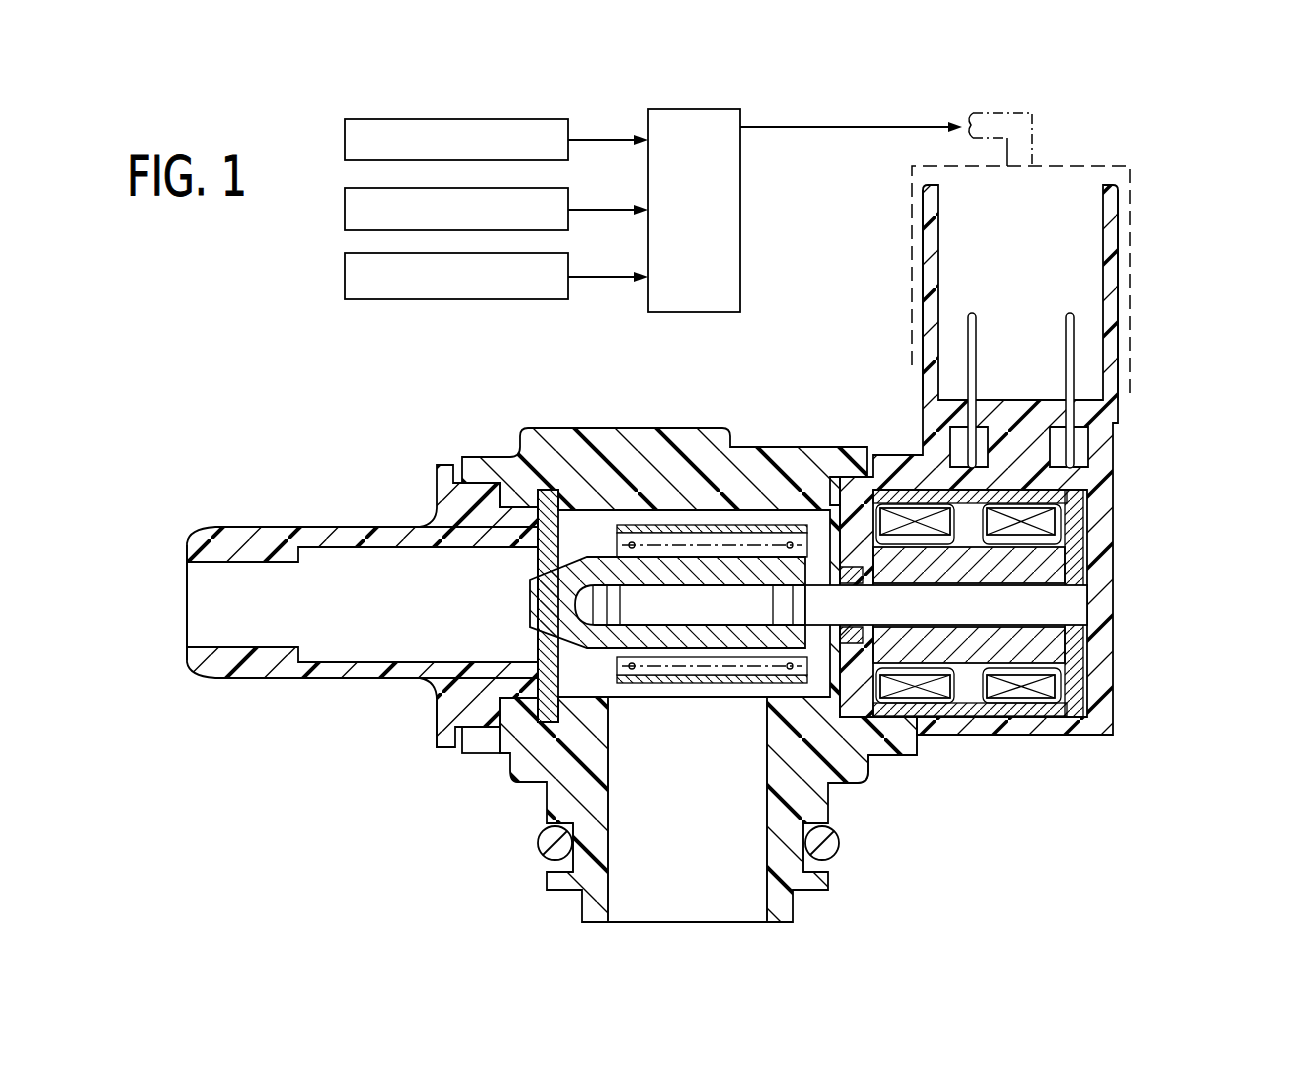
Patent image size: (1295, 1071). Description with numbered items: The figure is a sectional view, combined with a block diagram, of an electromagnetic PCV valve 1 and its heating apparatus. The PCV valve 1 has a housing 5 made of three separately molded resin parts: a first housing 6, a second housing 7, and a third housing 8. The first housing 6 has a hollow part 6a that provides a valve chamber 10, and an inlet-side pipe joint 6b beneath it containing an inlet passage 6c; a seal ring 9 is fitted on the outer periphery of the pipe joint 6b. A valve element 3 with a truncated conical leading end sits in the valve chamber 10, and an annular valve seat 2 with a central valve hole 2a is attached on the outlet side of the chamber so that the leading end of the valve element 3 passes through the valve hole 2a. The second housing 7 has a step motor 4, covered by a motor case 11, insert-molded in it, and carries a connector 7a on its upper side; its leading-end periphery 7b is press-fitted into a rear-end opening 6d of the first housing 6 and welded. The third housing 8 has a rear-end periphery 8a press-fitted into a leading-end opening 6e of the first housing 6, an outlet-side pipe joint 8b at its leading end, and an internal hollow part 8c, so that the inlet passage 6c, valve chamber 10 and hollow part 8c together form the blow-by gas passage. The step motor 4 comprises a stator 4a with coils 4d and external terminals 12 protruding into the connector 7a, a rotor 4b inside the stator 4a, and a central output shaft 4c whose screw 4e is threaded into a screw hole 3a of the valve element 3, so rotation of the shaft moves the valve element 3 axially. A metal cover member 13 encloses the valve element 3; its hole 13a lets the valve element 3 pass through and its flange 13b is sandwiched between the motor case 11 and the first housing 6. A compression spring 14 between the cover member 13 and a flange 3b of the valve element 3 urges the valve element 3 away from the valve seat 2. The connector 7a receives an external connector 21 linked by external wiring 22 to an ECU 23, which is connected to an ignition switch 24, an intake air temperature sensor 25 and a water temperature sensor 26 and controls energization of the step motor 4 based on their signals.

The electromagnetic PCV valve 1 is at (722, 553).
The valve seat 2 is at (520, 545).
The valve hole 2a is at (540, 563).
The valve element 3 is at (712, 512).
The screw hole 3a is at (687, 613).
The flange 3b is at (800, 547).
The step motor 4 is at (996, 642).
The stator 4a is at (1078, 705).
The rotor 4b is at (1062, 566).
The output shaft 4c is at (1082, 605).
The coils 4d is at (1100, 512).
The screw 4e is at (737, 630).
The housing 5 is at (696, 540).
The first housing 6 is at (699, 644).
The hollow part 6a is at (745, 510).
The inlet-side pipe joint 6b is at (822, 880).
The inlet passage 6c is at (610, 900).
The rear-end opening 6d is at (830, 720).
The leading-end opening 6e is at (537, 690).
The second housing 7 is at (1005, 460).
The connector 7a is at (1117, 243).
The leading-end periphery 7b is at (847, 477).
The third housing 8 is at (363, 586).
The rear-end periphery 8a is at (540, 700).
The outlet-side pipe joint 8b is at (228, 668).
The hollow part 8c is at (340, 650).
The seal ring 9 is at (840, 846).
The valve chamber 10 is at (530, 763).
The motor case 11 is at (1030, 720).
The external terminals 12 is at (1063, 330).
The cover member 13 is at (707, 530).
The hole 13a is at (605, 633).
The flange 13b is at (845, 735).
The compression spring 14 is at (773, 557).
The external connector 21 is at (1134, 184).
The external wiring 22 is at (1015, 114).
The electronic control unit (ECU) 23 is at (678, 110).
The ignition switch 24 is at (345, 140).
The intake air temperature sensor 25 is at (345, 209).
The water temperature sensor 26 is at (345, 276).